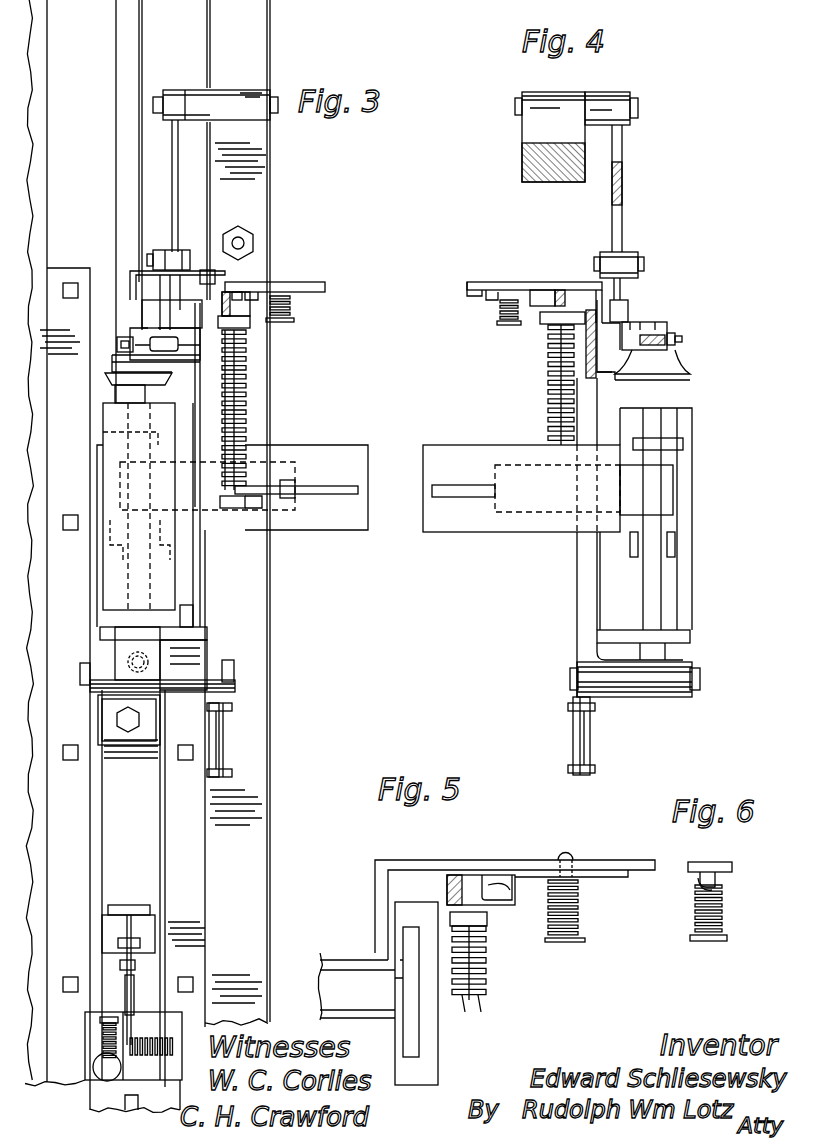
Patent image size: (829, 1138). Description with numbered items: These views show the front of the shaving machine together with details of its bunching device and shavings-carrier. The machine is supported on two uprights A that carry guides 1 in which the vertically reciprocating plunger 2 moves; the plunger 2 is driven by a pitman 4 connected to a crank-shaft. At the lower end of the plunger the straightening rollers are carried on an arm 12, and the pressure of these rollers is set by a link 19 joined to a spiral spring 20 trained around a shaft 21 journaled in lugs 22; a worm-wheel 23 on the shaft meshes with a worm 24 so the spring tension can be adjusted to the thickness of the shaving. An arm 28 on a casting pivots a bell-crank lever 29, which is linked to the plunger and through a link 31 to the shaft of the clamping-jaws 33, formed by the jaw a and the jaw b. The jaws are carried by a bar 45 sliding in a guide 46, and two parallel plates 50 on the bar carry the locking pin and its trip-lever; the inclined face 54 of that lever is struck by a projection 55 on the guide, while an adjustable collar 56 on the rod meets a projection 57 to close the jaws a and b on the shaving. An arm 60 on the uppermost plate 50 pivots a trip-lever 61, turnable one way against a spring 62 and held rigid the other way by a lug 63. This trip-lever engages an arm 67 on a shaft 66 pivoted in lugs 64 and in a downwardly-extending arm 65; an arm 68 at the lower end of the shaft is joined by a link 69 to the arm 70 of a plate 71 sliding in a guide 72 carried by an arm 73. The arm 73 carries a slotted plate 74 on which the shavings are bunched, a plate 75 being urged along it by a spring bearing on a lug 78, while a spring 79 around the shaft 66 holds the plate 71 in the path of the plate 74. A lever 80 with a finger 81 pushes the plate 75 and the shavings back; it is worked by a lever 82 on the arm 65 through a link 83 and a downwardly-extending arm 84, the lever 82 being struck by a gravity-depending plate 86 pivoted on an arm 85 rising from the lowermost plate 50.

In FIG. 3, the guides 1 is at (122, 543).
In FIG. 3, the plunger 2 is at (135, 901).
In FIG. 3, the pitman 4 is at (114, 146).
In FIG. 3, the arm 12 is at (112, 929).
In FIG. 3, the link 19 is at (135, 966).
In FIG. 3, the spiral spring 20 is at (133, 1018).
In FIG. 3, the shaft 21 is at (143, 1046).
In FIG. 3, the lugs 22 is at (127, 1056).
In FIG. 3, the worm-wheel 23 is at (102, 1034).
In FIG. 3, the worm 24 is at (100, 1066).
In FIG. 3, the arm 28 is at (215, 512).
In FIG. 4, the arm 28 is at (521, 154).
In FIG. 3, the bell-crank lever 29 is at (174, 184).
In FIG. 4, the bell-crank lever 29 is at (623, 182).
In FIG. 3, the link 31 is at (162, 250).
In FIG. 4, the link 31 is at (660, 322).
In FIG. 4, the clamping-jaws 33 is at (689, 348).
In FIG. 5, the bar 45 is at (410, 950).
In FIG. 3, the guide 46 is at (190, 300).
In FIG. 4, the guide 46 is at (622, 300).
In FIG. 5, the guide 46 is at (434, 1040).
In FIG. 4, the parallel plates 50 is at (608, 318).
In FIG. 5, the parallel plates 50 is at (362, 972).
In FIG. 3, the inclined face 54 is at (240, 370).
In FIG. 3, the projection 55 is at (167, 344).
In FIG. 3, the adjustable collar 56 is at (117, 344).
In FIG. 3, the projection 57 is at (115, 366).
In FIG. 4, the projection 57 is at (612, 378).
In FIG. 3, the arm 60 is at (296, 282).
In FIG. 4, the arm 60 is at (572, 282).
In FIG. 5, the arm 60 is at (446, 862).
In FIG. 6, the arm 60 is at (732, 866).
In FIG. 3, the trip-lever 61 is at (250, 290).
In FIG. 4, the trip-lever 61 is at (522, 290).
In FIG. 5, the trip-lever 61 is at (530, 875).
In FIG. 6, the trip-lever 61 is at (705, 862).
In FIG. 3, the spring 62 is at (292, 309).
In FIG. 4, the spring 62 is at (498, 316).
In FIG. 5, the spring 62 is at (580, 910).
In FIG. 6, the spring 62 is at (724, 910).
In FIG. 4, the lug 63 is at (469, 282).
In FIG. 3, the lugs 64 is at (252, 330).
In FIG. 4, the lugs 64 is at (542, 318).
In FIG. 5, the lugs 64 is at (486, 922).
In FIG. 3, the downwardly-extending arm 65 is at (200, 468).
In FIG. 4, the downwardly-extending arm 65 is at (592, 398).
In FIG. 3, the shaft 66 is at (245, 408).
In FIG. 4, the shaft 66 is at (548, 396).
In FIG. 5, the shaft 66 is at (469, 977).
In FIG. 3, the arm 67 is at (258, 312).
In FIG. 4, the arm 67 is at (546, 290).
In FIG. 5, the arm 67 is at (505, 892).
In FIG. 3, the arm 68 is at (262, 503).
In FIG. 3, the link 69 is at (280, 484).
In FIG. 3, the arm 70 is at (297, 493).
In FIG. 3, the plate 71 is at (294, 460).
In FIG. 4, the plate 71 is at (584, 490).
In FIG. 3, the guide 72 is at (350, 447).
In FIG. 4, the guide 72 is at (521, 488).
In FIG. 3, the downwardly-extending arm 73 is at (202, 585).
In FIG. 4, the downwardly-extending arm 73 is at (597, 600).
In FIG. 3, the slotted plate 74 is at (104, 632).
In FIG. 4, the slotted plate 74 is at (690, 636).
In FIG. 3, the plate 75 is at (112, 490).
In FIG. 4, the plate 75 is at (677, 596).
In FIG. 3, the lug 78 is at (118, 647).
In FIG. 3, the spring 79 is at (246, 372).
In FIG. 4, the spring 79 is at (548, 372).
In FIG. 5, the spring 79 is at (483, 990).
In FIG. 3, the lever 80 is at (96, 468).
In FIG. 4, the lever 80 is at (685, 570).
In FIG. 3, the finger 81 is at (102, 440).
In FIG. 4, the finger 81 is at (683, 443).
In FIG. 3, the lever 82 is at (214, 620).
In FIG. 4, the lever 82 is at (577, 568).
In FIG. 3, the link 83 is at (225, 740).
In FIG. 4, the link 83 is at (573, 745).
In FIG. 3, the downwardly-extending arm 84 is at (215, 752).
In FIG. 4, the downwardly-extending arm 84 is at (588, 733).
In FIG. 3, the arm 85 is at (142, 271).
In FIG. 3, the plate 86 is at (208, 272).
In FIG. 3, the uprights A is at (268, 30).
In FIG. 4, the jaw a is at (680, 377).
In FIG. 3, the jaw b is at (155, 385).
In FIG. 4, the jaw b is at (662, 330).